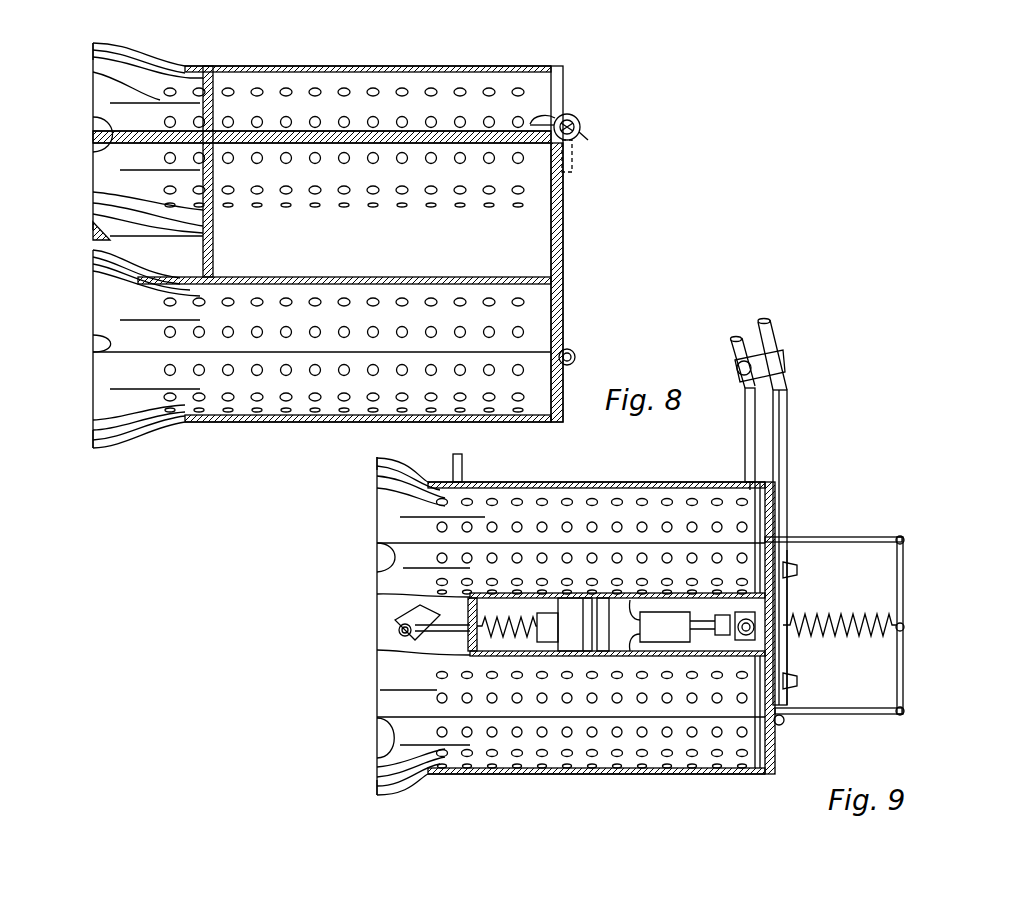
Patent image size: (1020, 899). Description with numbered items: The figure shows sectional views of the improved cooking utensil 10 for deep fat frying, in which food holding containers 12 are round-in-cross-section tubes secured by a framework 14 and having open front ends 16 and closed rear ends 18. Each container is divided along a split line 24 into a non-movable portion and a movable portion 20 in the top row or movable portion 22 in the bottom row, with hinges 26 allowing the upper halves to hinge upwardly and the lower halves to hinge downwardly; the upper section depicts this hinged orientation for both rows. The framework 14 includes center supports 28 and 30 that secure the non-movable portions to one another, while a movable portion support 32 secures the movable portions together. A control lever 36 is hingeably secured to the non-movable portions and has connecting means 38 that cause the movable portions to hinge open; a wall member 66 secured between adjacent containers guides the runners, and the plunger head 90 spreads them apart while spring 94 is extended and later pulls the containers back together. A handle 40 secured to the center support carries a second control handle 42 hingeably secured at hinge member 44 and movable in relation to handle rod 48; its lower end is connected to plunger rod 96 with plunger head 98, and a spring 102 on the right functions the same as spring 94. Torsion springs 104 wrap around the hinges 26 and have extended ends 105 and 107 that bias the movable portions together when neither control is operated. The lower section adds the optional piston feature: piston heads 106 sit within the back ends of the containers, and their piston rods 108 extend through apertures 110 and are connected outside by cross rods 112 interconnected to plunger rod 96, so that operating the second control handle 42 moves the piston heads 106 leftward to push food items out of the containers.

In FIG. 8, the cooking utensil 10 is at (190, 24).
In FIG. 9, the cooking utensil 10 is at (806, 410).
In FIG. 8, the food holding containers 12 is at (88, 59).
In FIG. 9, the food holding containers 12 is at (375, 507).
In FIG. 8, the framework 14 is at (116, 131).
In FIG. 8, the open front ends 16 is at (88, 89).
In FIG. 9, the open front ends 16 is at (362, 530).
In FIG. 8, the closed rear ends 18 is at (530, 124).
In FIG. 9, the closed rear ends 18 is at (753, 486).
In FIG. 8, the movable portions 20 is at (118, 57).
In FIG. 9, the movable portions 20 is at (385, 478).
In FIG. 8, the movable portions 22 is at (108, 189).
In FIG. 9, the movable portions 22 is at (385, 553).
In FIG. 8, the split lines 24 is at (118, 146).
In FIG. 9, the split lines 24 is at (388, 565).
In FIG. 8, the hinges 26 is at (578, 118).
In FIG. 8, the center support 28 is at (205, 236).
In FIG. 9, the center support 28 is at (385, 640).
In FIG. 8, the center support 30 is at (560, 240).
In FIG. 9, the center support 30 is at (798, 569).
In FIG. 8, the movable portion support 32 is at (204, 66).
In FIG. 9, the control lever 36 is at (462, 458).
In FIG. 9, the connecting means 38 is at (385, 612).
In FIG. 9, the handle 40 is at (780, 322).
In FIG. 9, the second control handle 42 is at (730, 345).
In FIG. 9, the hinge member 44 is at (778, 352).
In FIG. 9, the handle rod 48 is at (746, 418).
In FIG. 9, the wall member 66 is at (580, 655).
In FIG. 9, the plunger head 90 is at (548, 632).
In FIG. 9, the spring 94 is at (475, 640).
In FIG. 9, the plunger rod 96 is at (840, 624).
In FIG. 9, the plunger head 98 is at (698, 642).
In FIG. 9, the spring 102 is at (870, 634).
In FIG. 8, the torsion springs 104 is at (590, 141).
In FIG. 8, the extended end 105 is at (530, 126).
In FIG. 9, the piston heads 106 is at (758, 500).
In FIG. 8, the extended end 107 is at (570, 168).
In FIG. 9, the piston rods 108 is at (888, 537).
In FIG. 9, the apertures 110 is at (786, 530).
In FIG. 9, the cross rods 112 is at (905, 625).